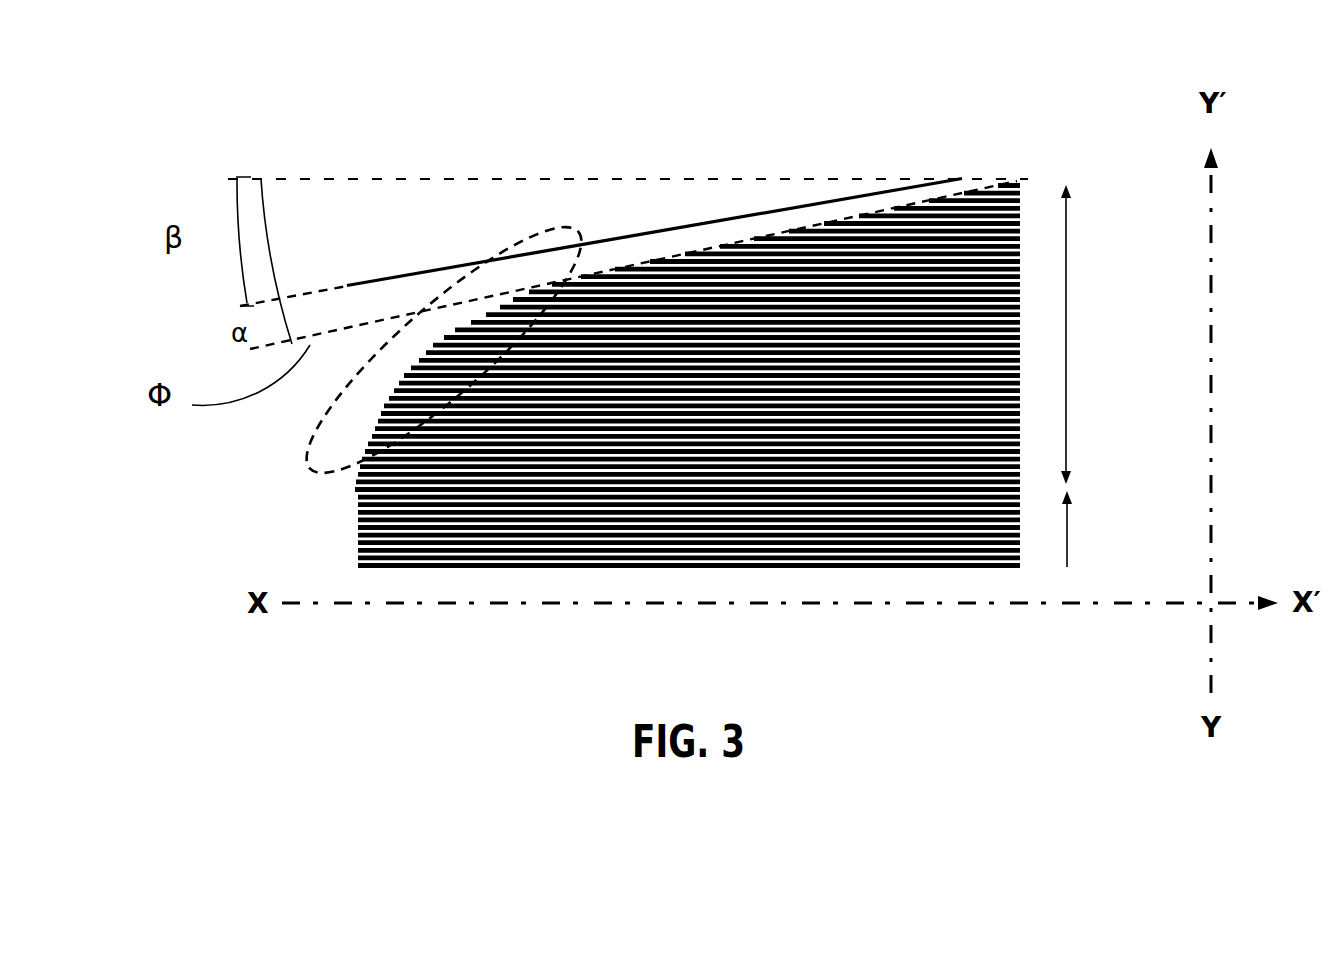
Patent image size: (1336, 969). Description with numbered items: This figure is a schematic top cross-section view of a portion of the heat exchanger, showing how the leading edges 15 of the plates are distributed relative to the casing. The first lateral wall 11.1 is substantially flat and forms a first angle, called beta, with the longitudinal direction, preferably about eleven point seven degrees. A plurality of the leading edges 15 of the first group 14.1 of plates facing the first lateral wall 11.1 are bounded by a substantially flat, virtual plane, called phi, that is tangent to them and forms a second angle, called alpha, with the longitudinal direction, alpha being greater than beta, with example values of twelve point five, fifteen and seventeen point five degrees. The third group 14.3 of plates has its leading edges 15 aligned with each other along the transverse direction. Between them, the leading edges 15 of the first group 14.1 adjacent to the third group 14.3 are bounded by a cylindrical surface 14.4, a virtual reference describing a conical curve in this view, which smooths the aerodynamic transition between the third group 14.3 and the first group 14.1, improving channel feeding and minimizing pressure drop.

The first lateral wall 11.1 is at (777, 210).
The first group of plates 14.1 is at (1112, 334).
The third group of plates 14.3 is at (1112, 529).
The cylindrical surface 14.4 is at (444, 348).
The leading edges 15 is at (362, 525).